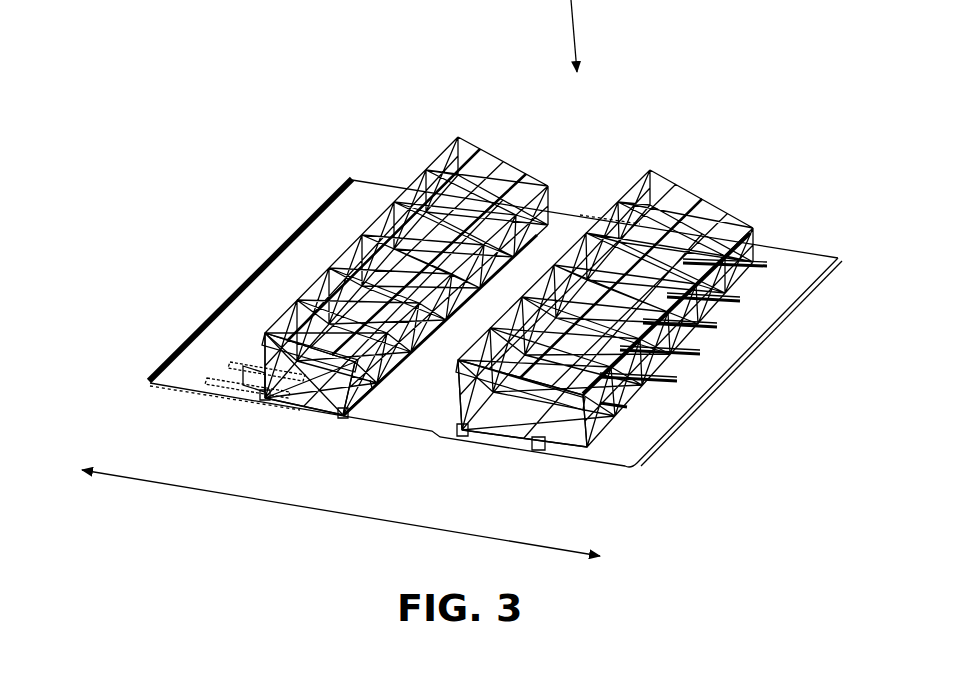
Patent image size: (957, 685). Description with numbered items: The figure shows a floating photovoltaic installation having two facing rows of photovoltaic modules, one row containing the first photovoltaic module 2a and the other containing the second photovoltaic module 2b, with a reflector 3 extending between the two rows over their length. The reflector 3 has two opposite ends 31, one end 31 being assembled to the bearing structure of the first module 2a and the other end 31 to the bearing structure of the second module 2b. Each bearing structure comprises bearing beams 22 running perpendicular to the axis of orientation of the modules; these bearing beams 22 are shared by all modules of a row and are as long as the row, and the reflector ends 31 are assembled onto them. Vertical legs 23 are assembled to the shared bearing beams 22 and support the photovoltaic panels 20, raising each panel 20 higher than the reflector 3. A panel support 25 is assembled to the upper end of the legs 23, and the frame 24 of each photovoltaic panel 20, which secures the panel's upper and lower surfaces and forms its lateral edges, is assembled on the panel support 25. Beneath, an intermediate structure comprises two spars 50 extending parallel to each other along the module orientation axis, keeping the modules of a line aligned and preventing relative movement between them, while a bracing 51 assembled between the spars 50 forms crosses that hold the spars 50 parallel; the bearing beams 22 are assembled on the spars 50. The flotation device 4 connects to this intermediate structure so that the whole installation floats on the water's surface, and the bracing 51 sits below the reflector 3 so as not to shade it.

The first photovoltaic module 2a is at (470, 187).
The second photovoltaic module 2b is at (670, 223).
The reflector 3 is at (193, 380).
The flotation device 4 is at (600, 425).
The photovoltaic panel 20 is at (290, 332).
The bearing beam 22 is at (463, 423).
The leg 23 is at (264, 397).
The frame 24 is at (368, 398).
The panel support 25 is at (312, 365).
The end of the reflector 31 is at (305, 222).
The spar 50 is at (248, 340).
The bracing 51 is at (252, 372).